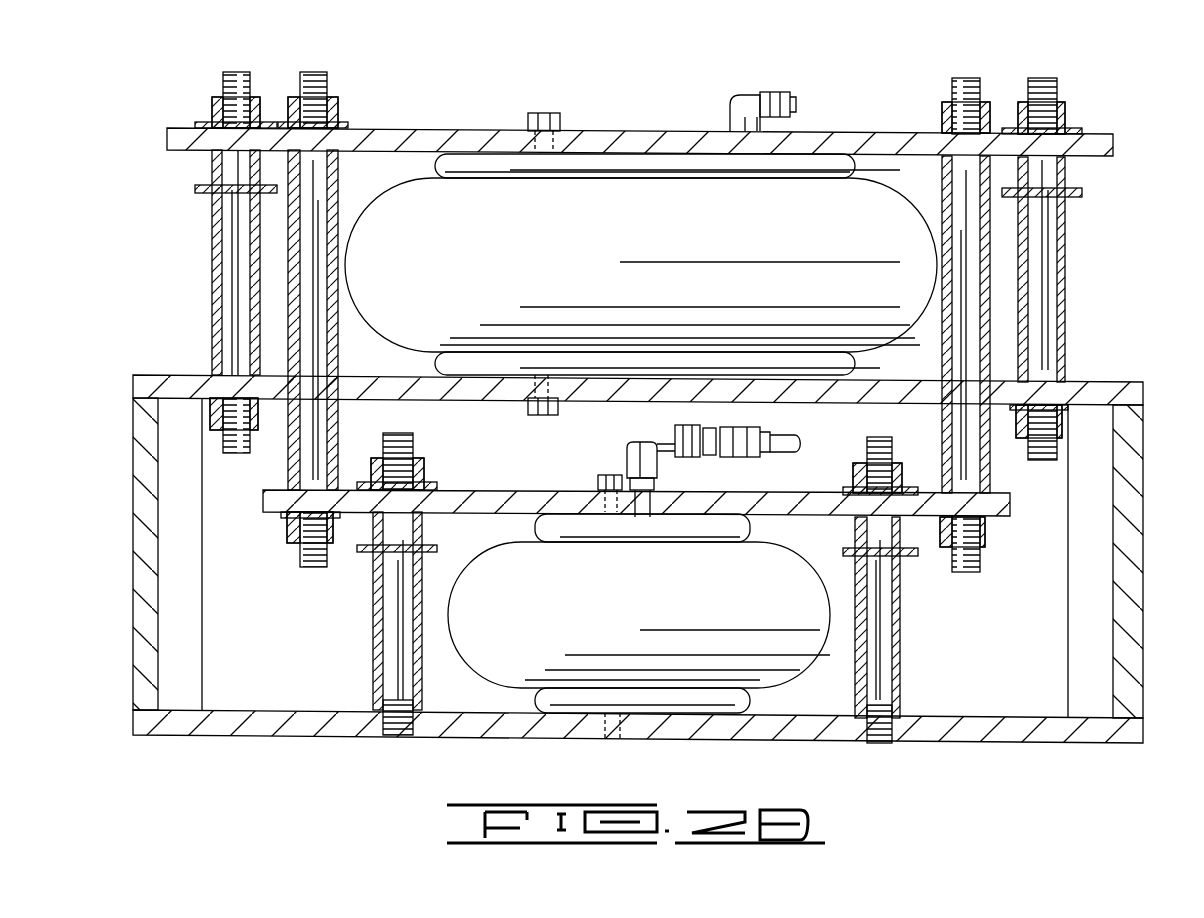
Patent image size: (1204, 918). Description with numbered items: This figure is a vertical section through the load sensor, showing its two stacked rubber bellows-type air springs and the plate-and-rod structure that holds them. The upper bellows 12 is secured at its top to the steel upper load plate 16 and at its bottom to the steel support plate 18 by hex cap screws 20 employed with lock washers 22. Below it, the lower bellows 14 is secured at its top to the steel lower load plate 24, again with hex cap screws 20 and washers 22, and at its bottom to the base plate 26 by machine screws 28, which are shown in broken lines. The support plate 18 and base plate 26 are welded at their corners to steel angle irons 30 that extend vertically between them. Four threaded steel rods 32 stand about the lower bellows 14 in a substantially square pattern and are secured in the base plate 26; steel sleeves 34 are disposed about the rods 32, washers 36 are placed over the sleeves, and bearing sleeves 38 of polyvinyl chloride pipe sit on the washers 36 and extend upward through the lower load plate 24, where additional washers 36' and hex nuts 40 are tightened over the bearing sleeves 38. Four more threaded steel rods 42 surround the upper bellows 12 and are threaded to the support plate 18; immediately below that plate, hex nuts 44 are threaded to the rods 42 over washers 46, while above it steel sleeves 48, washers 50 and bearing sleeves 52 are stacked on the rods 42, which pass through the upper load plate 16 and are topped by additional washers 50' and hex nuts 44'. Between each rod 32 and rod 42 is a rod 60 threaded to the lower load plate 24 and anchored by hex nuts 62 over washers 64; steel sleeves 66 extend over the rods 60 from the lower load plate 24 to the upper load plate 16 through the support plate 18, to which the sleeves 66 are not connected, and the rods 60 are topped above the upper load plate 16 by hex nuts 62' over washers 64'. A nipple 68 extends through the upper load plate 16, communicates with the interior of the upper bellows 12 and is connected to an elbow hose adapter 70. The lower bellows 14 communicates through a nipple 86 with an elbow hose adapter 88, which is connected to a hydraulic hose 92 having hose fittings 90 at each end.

The upper bellows 12 is at (652, 249).
The lower bellows 14 is at (660, 611).
The upper load plate 16 is at (1116, 148).
The support plate 18 is at (1124, 392).
The hex cap screws 20 is at (545, 113).
The lock washers 22 is at (553, 115).
The lower load plate 24 is at (992, 507).
The base plate 26 is at (1117, 731).
The machine screws 28 is at (603, 733).
The angle irons 30 is at (1122, 568).
The threaded steel rods 32 is at (395, 733).
The steel sleeves 34 is at (377, 627).
The washers 36 is at (420, 539).
The additional washers 36' is at (425, 474).
The bearing sleeves 38 is at (378, 518).
The hex nuts 40 is at (418, 468).
The threaded steel rods 42 is at (1038, 90).
The hex nuts 44 is at (1103, 432).
The hex nuts 44' is at (1079, 105).
The washers 46 is at (1063, 408).
The steel sleeves 48 is at (1065, 284).
The washers 50 is at (1082, 191).
The additional washers 50' is at (1085, 117).
The bearing sleeves 52 is at (1022, 172).
The rod 60 is at (313, 82).
The hex nuts 62 is at (276, 541).
The hex nuts 62' is at (313, 73).
The washers 64 is at (278, 525).
The washers 64' is at (340, 113).
The steel sleeves 66 is at (332, 180).
The nipple 68 is at (730, 117).
The elbow hose adapter 70 is at (745, 93).
The nipple 86 is at (652, 483).
The elbow hose adapter 88 is at (638, 452).
The hose fittings 90 is at (742, 438).
The hydraulic hose 92 is at (787, 438).